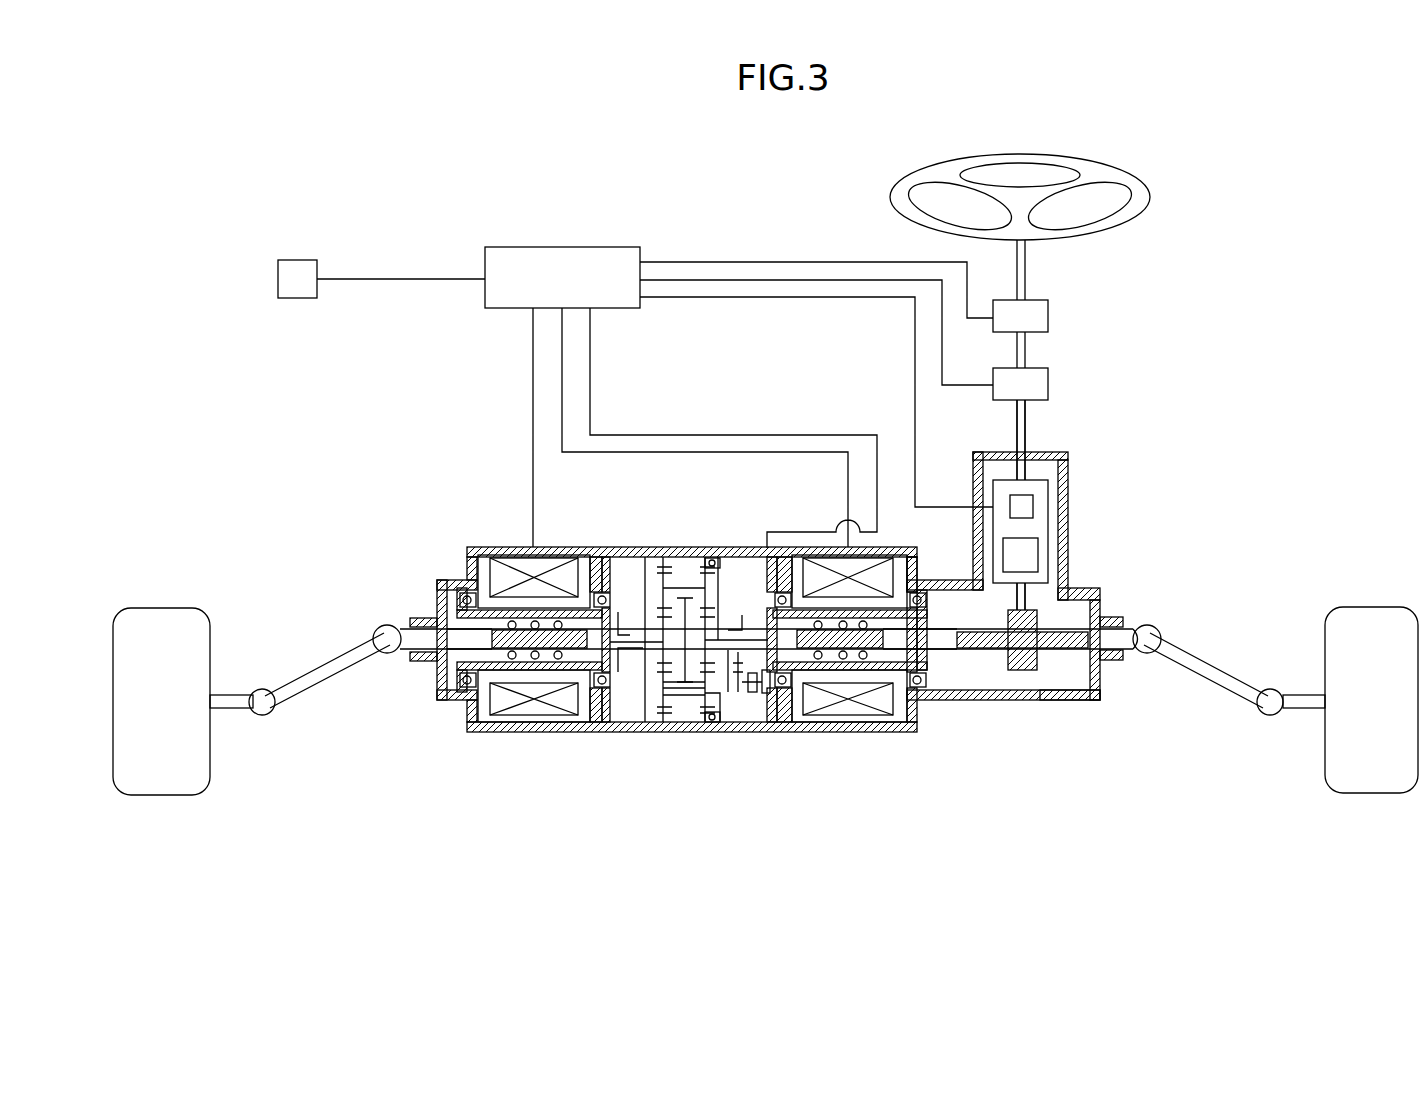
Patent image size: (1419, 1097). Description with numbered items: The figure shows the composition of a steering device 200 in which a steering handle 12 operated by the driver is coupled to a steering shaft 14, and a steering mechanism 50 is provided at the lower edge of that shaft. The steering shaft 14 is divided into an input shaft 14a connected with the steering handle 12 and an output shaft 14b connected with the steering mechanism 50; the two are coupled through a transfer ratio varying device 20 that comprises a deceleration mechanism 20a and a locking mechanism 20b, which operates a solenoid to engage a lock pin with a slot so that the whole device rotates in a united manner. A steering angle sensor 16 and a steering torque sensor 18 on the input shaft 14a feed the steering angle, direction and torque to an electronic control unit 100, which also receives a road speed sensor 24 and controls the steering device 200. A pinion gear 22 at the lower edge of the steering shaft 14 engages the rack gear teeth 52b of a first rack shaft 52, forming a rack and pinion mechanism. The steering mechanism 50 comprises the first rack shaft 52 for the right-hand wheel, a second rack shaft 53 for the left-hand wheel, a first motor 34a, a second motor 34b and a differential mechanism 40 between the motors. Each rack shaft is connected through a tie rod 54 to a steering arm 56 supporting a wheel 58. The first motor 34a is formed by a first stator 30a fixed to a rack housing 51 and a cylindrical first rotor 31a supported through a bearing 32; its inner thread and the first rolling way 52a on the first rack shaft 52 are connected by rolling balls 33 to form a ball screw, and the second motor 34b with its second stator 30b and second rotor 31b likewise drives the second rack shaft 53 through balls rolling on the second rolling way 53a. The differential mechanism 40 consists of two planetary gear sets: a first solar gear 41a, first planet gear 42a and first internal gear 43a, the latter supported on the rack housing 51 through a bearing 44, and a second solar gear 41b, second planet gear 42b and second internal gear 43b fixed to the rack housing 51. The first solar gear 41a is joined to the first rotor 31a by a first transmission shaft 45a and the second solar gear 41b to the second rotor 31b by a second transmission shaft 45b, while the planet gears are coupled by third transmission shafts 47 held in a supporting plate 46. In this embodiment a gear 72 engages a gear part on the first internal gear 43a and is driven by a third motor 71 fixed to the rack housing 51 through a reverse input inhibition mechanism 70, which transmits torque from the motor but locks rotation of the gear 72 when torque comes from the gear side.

The steering handle 12 is at (1150, 187).
The steering shaft 14 is at (1025, 432).
The input shaft 14a is at (1025, 470).
The output shaft 14b is at (1025, 595).
The steering angle sensor 16 is at (1048, 316).
The steering torque sensor 18 is at (1048, 384).
The transfer ratio varying device 20 is at (1048, 520).
The deceleration mechanism 20a is at (1038, 548).
The locking mechanism 20b is at (1033, 503).
The pinion gear 22 is at (1037, 625).
The road speed sensor 24 is at (300, 260).
The first stator 30a is at (860, 733).
The second stator 30b is at (528, 733).
The first rotor 31a is at (835, 733).
The second rotor 31b is at (560, 733).
The bearing 32 is at (422, 665).
The rolling balls 33 is at (470, 700).
The first motor 34a is at (908, 821).
The second motor 34b is at (570, 822).
The differential mechanism 40 is at (728, 540).
The first solar gear 41a is at (758, 547).
The second solar gear 41b is at (617, 548).
The first planet gear 42a is at (735, 548).
The second planet gear 42b is at (632, 548).
The first internal gear 43a is at (722, 733).
The second internal gear 43b is at (652, 733).
The bearing 44 is at (712, 548).
The first transmission shaft 45a is at (788, 548).
The second transmission shaft 45b is at (600, 733).
The supporting plate 46 is at (598, 548).
The third transmission shafts 47 is at (672, 733).
The steering mechanism 50 is at (698, 733).
The rack housing 51 is at (910, 737).
The first rack shaft 52 is at (1115, 660).
The first rolling way 52a is at (965, 700).
The rack gear teeth 52b is at (1060, 700).
The second rack shaft 53 is at (425, 662).
The second rolling way 53a is at (442, 618).
The tie rod 54 is at (318, 675).
The steering arm 56 is at (228, 705).
The wheel 58 is at (163, 785).
The reverse input inhibition mechanism 70 is at (744, 733).
The third motor 71 is at (750, 733).
The gear 72 is at (738, 733).
The electronic control unit 100 is at (600, 247).
The steering device 200 is at (786, 917).